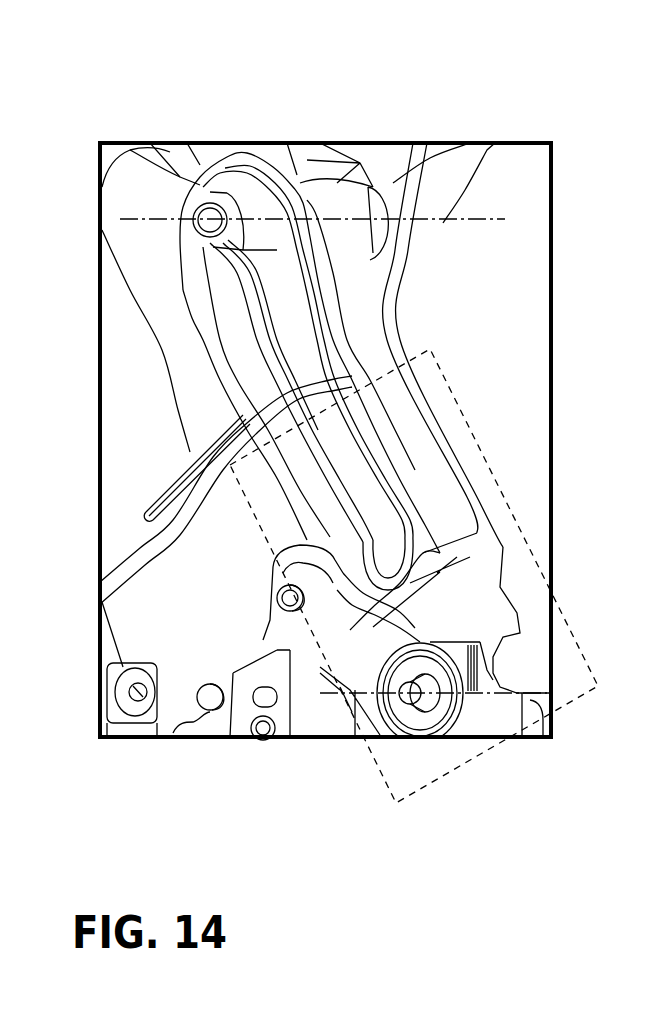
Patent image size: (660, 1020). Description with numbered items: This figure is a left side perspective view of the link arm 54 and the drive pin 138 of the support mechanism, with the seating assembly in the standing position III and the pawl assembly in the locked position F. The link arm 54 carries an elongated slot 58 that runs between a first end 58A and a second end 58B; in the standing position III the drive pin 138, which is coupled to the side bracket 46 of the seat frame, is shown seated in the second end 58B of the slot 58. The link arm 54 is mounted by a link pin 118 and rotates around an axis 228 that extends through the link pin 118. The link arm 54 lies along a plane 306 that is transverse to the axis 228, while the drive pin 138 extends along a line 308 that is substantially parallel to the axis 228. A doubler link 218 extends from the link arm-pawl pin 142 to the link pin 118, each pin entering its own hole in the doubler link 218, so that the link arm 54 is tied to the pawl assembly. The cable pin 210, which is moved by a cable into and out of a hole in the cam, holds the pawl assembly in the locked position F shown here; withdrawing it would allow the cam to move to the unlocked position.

The second end of the slot 58B is at (211, 192).
The drive pin 138 is at (376, 190).
The side bracket 46 is at (432, 176).
The line 308 is at (462, 175).
The link arm 54 is at (357, 313).
The standing position III is at (507, 370).
The slot 58 is at (408, 371).
The plane 306 is at (493, 468).
The end of the slot 58A is at (407, 537).
The doubler link 218 is at (367, 642).
The locked position F is at (268, 582).
The link pin 118 is at (412, 700).
The axis 228 is at (356, 690).
The link arm-pawl pin 142 is at (290, 608).
The cable pin 210 is at (208, 708).